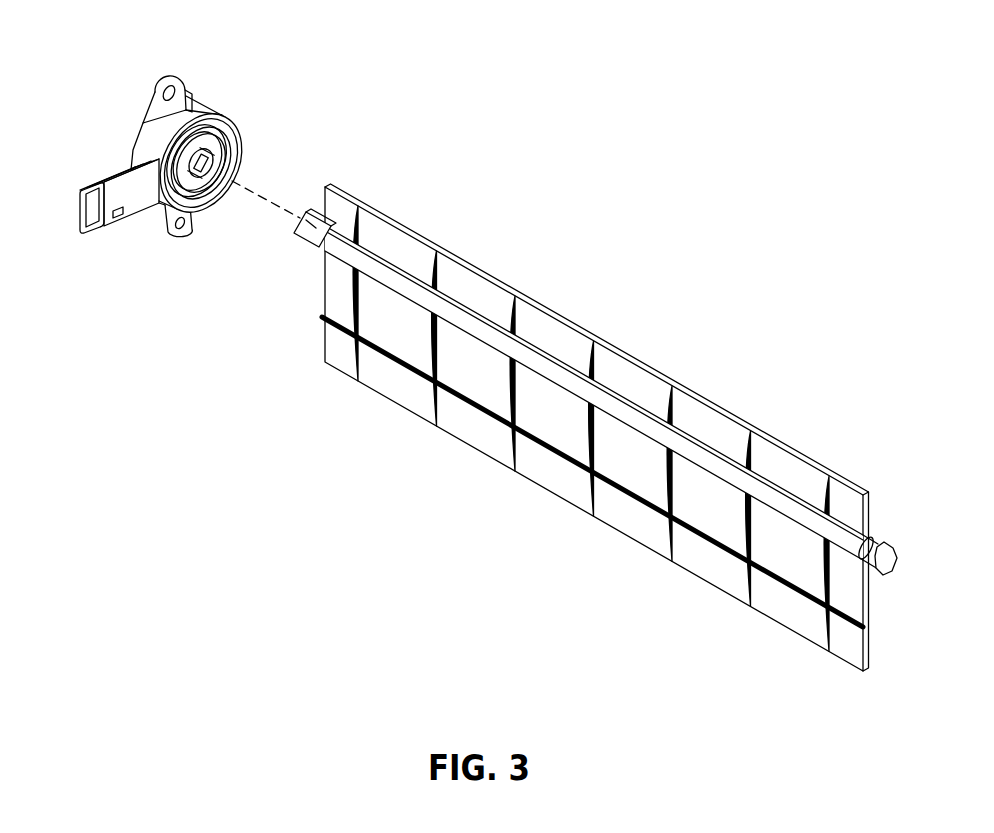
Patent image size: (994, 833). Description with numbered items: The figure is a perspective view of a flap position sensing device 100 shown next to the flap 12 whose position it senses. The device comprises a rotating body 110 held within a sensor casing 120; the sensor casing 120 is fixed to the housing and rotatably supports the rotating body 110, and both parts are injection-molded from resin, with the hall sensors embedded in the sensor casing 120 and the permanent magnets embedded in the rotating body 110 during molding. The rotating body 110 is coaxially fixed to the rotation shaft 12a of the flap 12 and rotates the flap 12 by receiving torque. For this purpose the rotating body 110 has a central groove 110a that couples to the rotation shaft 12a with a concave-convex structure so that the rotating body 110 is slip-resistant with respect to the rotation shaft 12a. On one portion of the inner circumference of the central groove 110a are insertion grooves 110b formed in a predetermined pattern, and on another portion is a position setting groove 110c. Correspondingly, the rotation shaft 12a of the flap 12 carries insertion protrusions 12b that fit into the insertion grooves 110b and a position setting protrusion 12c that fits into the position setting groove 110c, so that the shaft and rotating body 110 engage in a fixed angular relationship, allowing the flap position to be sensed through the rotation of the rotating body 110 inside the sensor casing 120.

The flap position sensing device 100 is at (92, 85).
The rotating body 110 is at (200, 183).
The central groove 110a is at (222, 170).
The insertion grooves 110b is at (216, 152).
The position setting groove 110c is at (215, 124).
The sensor casing 120 is at (146, 127).
The flap 12 is at (633, 379).
The rotation shaft 12a is at (335, 247).
The insertion protrusions 12b is at (313, 247).
The position setting protrusion 12c is at (304, 246).